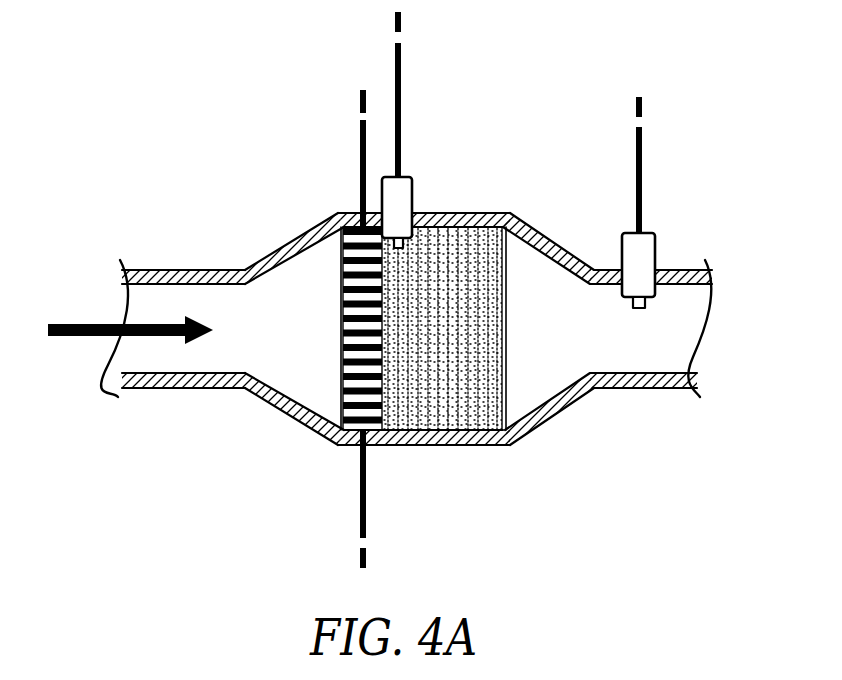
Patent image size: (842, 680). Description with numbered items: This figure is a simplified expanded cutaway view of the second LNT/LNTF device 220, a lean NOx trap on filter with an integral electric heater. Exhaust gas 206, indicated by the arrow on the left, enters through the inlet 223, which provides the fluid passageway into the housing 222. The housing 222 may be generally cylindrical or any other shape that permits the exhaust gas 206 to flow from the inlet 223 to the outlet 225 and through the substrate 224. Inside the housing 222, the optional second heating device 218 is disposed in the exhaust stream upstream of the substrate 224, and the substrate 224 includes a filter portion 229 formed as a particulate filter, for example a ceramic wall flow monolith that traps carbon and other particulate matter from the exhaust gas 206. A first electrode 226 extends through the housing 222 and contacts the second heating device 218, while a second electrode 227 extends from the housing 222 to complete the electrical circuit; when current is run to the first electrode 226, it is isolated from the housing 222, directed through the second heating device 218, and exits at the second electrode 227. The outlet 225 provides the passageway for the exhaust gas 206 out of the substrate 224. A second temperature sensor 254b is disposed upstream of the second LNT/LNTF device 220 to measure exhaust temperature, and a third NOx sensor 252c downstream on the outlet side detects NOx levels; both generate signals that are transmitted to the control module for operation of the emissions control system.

The exhaust gas 206 is at (88, 324).
The second heating device 218 is at (355, 403).
The second LNT/LNTF device 220 is at (447, 291).
The housing 222 is at (275, 410).
The inlet 223 is at (202, 270).
The substrate 224 is at (473, 397).
The outlet 225 is at (685, 388).
The first electrode 226 is at (360, 185).
The second electrode 227 is at (357, 503).
The filter portion 229 is at (403, 358).
The third NOx sensor 252c is at (657, 260).
The second temperature sensor 254b is at (413, 197).